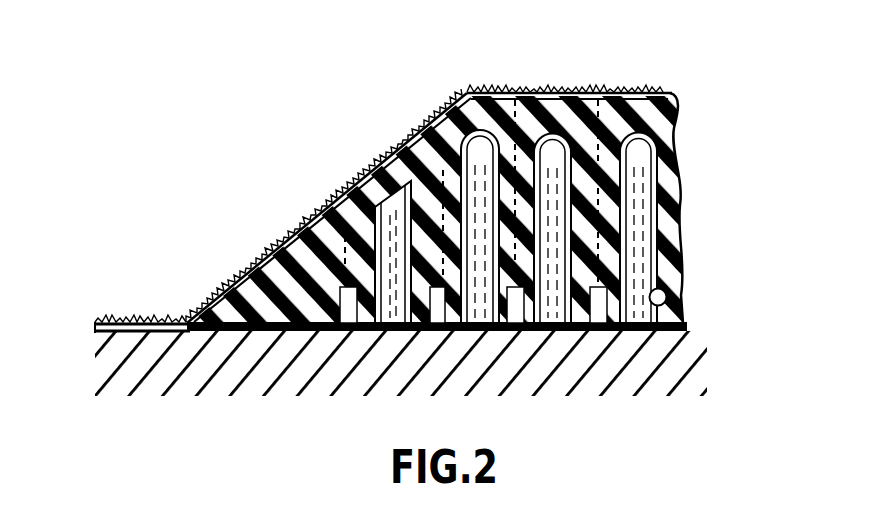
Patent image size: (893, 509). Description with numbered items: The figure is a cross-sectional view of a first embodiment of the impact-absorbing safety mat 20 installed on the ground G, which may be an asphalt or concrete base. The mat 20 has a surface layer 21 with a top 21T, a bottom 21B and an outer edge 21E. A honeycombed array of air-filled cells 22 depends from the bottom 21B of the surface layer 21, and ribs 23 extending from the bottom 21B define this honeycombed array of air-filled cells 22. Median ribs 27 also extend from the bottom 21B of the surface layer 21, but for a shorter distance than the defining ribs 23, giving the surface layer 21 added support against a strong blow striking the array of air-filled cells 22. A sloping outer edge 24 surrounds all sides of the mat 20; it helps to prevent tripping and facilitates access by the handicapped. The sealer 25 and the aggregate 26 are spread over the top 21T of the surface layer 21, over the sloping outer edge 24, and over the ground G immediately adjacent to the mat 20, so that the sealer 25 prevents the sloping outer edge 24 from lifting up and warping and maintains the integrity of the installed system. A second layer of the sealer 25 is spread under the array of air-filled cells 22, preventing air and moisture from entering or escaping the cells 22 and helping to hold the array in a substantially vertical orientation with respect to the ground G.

The impact-absorbing safety mat 20 is at (402, 230).
The surface layer 21 is at (667, 120).
The top of the surface layer 21T is at (604, 102).
The outer edge of the surface layer 21E is at (366, 197).
The bottom of the surface layer 21B is at (448, 157).
The air-filled cells 22 is at (398, 190).
The ribs 23 is at (667, 296).
The sloping outer edge 24 is at (244, 295).
The sealer 25 is at (95, 323).
The aggregate 26 is at (128, 320).
The median ribs 27 is at (512, 102).
The ground G is at (120, 370).